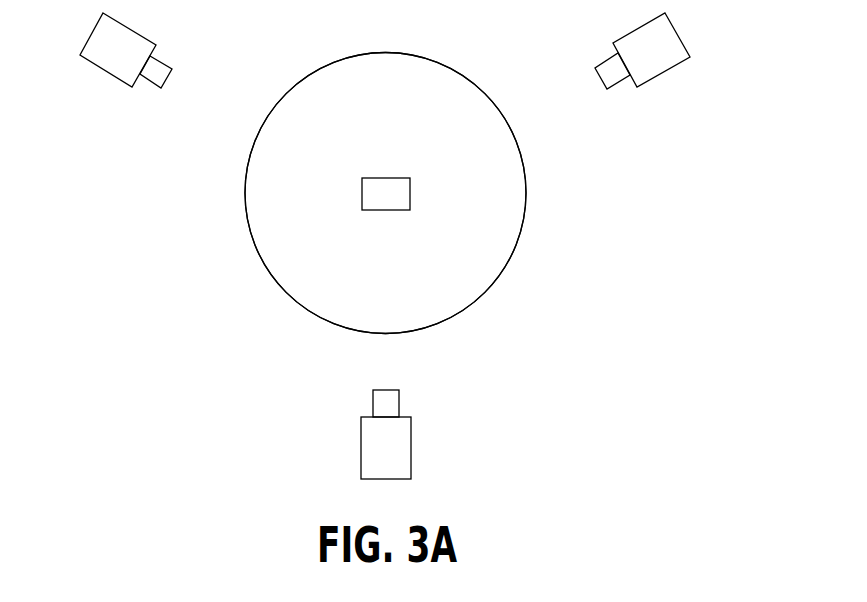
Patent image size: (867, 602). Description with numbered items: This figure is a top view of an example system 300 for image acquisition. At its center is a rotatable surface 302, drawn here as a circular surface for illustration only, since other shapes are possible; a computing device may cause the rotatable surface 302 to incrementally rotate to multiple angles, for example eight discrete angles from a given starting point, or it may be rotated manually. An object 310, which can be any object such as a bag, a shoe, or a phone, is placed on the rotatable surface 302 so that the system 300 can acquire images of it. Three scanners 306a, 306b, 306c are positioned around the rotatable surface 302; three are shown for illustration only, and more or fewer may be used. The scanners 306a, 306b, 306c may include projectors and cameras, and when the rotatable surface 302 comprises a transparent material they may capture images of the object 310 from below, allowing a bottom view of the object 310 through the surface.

The system for image acquisition 300 is at (272, 69).
The rotatable surface 302 is at (492, 288).
The object 310 is at (410, 193).
The scanner 306a is at (103, 69).
The scanner 306b is at (665, 71).
The scanner 306c is at (411, 448).